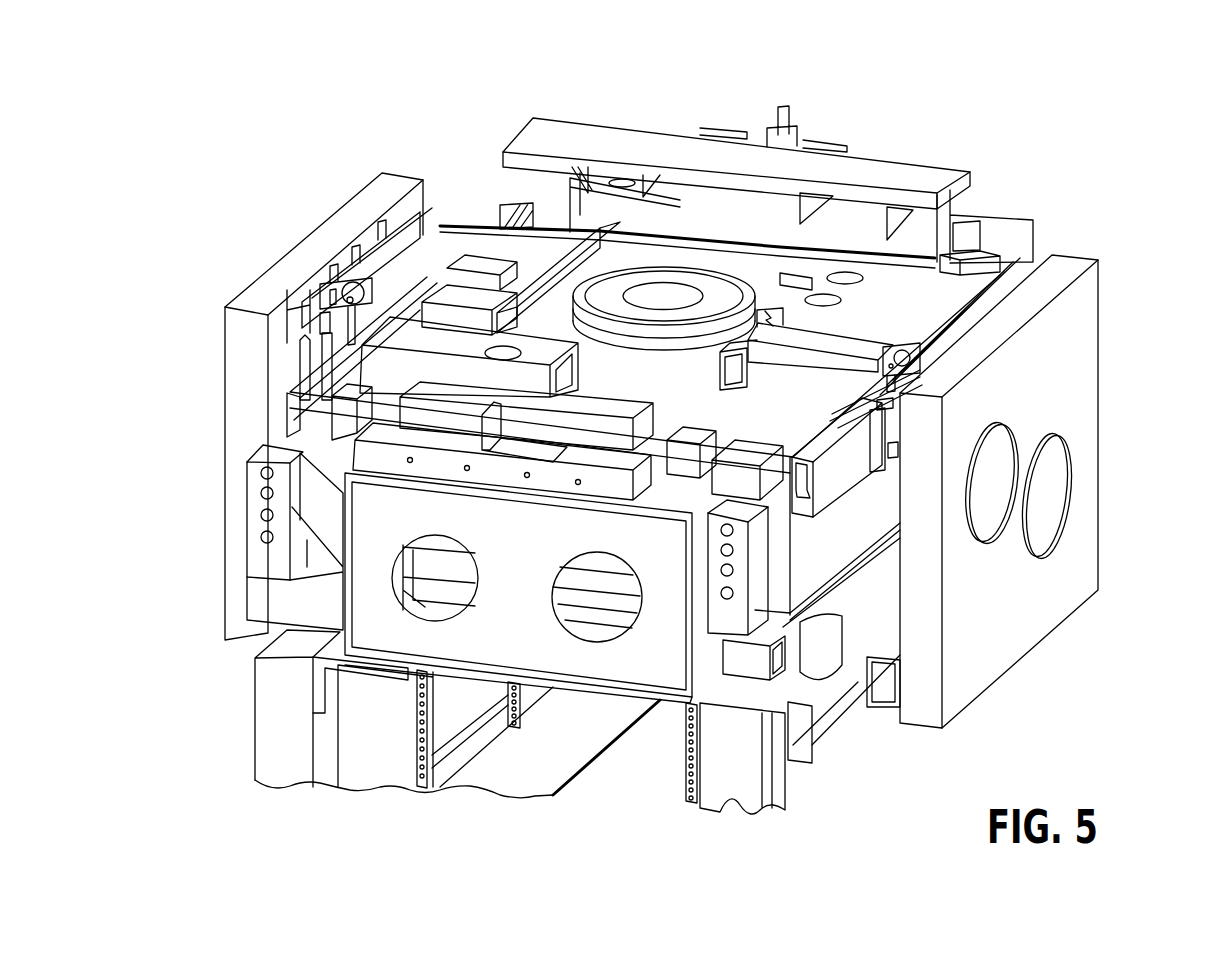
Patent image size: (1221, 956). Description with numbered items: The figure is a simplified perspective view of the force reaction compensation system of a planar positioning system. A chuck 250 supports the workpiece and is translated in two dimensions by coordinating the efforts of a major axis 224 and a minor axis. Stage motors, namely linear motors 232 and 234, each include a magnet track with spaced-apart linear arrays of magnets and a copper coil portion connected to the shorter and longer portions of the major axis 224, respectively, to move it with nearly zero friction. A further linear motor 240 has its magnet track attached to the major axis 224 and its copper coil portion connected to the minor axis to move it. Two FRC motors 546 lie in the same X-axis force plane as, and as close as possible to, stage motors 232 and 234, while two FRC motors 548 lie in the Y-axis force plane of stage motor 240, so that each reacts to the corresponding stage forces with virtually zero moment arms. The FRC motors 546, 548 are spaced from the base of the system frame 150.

The system frame 150 is at (1030, 380).
The major axis 224 is at (808, 250).
The linear motor 232 is at (430, 277).
The linear motor 234 is at (292, 426).
The linear motor 240 is at (853, 343).
The chuck 250 is at (633, 273).
The FRC motors 546 is at (316, 328).
The FRC motors 548 is at (952, 236).